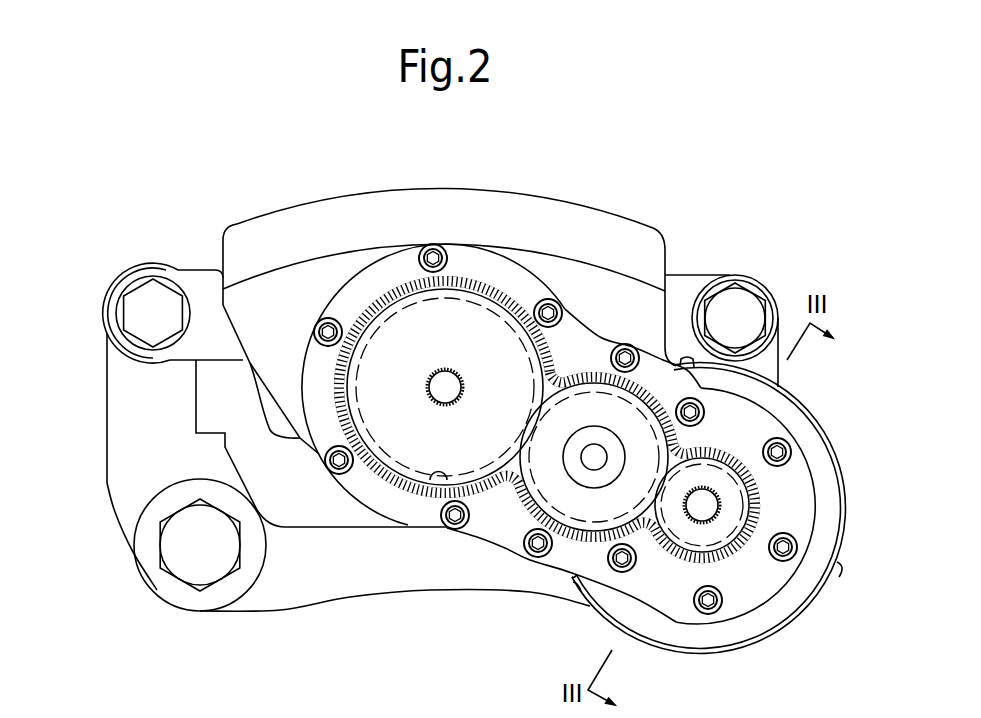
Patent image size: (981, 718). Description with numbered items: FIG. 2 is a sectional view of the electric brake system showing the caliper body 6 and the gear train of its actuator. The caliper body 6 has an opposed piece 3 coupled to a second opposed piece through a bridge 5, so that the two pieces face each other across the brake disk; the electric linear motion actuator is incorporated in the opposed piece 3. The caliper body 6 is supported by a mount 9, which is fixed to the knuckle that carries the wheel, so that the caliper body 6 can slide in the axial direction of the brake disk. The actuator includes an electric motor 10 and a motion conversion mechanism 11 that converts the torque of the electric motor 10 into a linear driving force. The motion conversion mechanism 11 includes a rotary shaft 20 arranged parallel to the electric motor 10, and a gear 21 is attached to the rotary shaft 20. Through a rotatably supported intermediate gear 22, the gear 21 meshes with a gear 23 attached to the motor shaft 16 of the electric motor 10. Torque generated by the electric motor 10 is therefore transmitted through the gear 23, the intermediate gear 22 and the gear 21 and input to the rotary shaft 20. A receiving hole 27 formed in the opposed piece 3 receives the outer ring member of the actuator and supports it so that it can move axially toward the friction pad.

The opposed piece 3 is at (577, 293).
The bridge 5 is at (427, 210).
The caliper body 6 is at (222, 226).
The mount 9 is at (117, 466).
The electric motor 10 is at (800, 613).
The motion conversion mechanism 11 is at (367, 290).
The motor shaft 16 is at (704, 503).
The rotary shaft 20 is at (445, 380).
The gear 21 is at (400, 443).
The intermediate gear 22 is at (572, 507).
The gear 23 is at (708, 528).
The receiving hole 27 is at (435, 474).